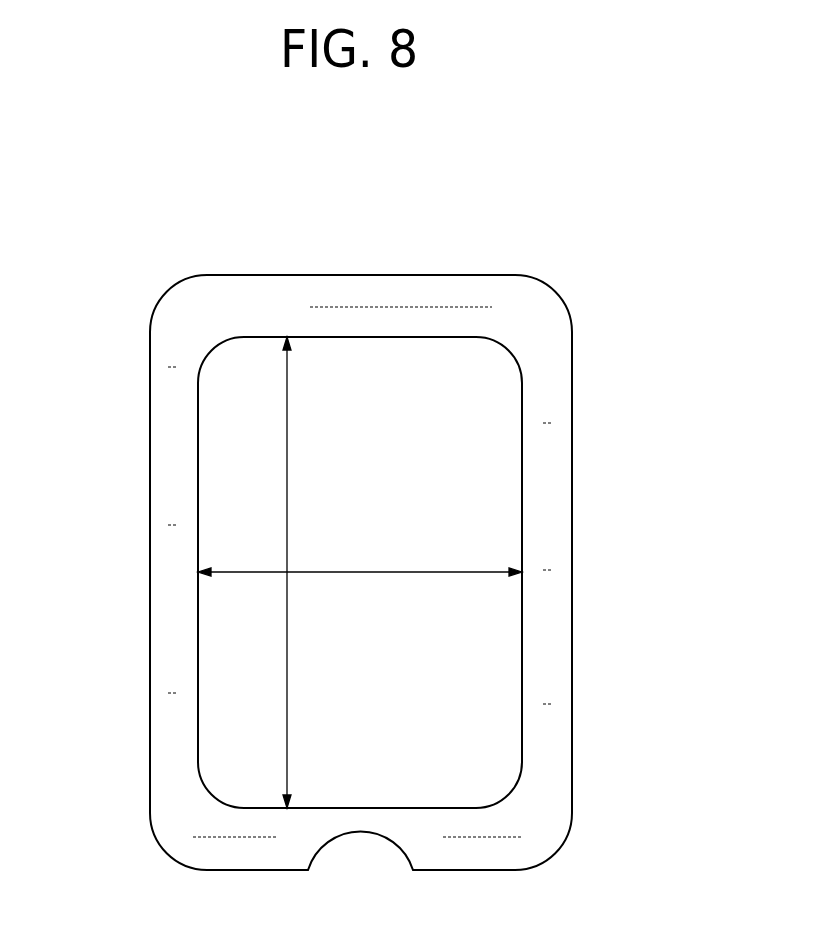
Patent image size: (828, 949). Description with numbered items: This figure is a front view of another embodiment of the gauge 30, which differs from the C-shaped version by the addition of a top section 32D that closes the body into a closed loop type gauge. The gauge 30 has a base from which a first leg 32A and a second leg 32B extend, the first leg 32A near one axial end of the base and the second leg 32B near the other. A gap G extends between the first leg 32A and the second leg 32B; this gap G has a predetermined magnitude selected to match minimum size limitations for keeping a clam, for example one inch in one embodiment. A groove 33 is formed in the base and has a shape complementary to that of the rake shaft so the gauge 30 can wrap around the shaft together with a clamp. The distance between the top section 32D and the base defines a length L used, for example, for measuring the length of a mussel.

The gauge 30 is at (371, 567).
The first leg 32A is at (172, 412).
The second leg 32B is at (558, 458).
The top section 32D is at (312, 295).
The groove 33 is at (353, 857).
The length L is at (287, 455).
The gap G is at (350, 572).